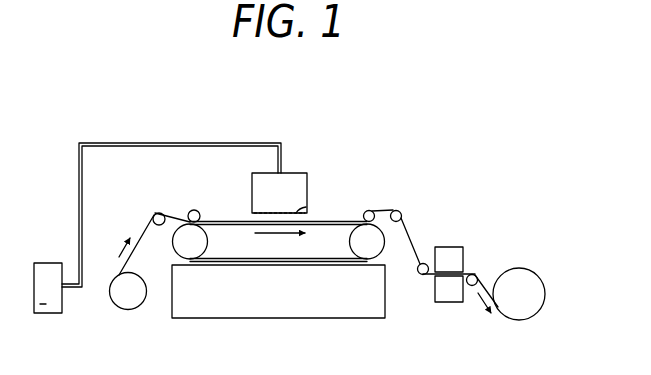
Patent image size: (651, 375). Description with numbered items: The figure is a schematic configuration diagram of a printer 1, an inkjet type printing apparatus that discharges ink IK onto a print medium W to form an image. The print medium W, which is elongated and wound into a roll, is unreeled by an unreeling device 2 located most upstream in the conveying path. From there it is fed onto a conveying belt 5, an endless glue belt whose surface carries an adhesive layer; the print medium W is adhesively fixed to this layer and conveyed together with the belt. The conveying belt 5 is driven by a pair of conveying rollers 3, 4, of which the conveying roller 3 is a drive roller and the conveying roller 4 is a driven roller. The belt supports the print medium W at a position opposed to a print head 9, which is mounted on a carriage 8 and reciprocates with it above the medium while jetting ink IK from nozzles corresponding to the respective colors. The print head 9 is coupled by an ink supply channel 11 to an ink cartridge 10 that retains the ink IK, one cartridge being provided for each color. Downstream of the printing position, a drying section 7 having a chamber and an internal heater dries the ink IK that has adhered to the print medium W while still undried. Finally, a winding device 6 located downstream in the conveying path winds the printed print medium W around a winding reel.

The printer 1 is at (278, 185).
The unreeling device 2 is at (141, 306).
The conveying roller 3 is at (208, 242).
The conveying roller 4 is at (384, 251).
The conveying belt 5 is at (283, 262).
The winding device 6 is at (519, 320).
The drying section 7 is at (473, 257).
The carriage 8 is at (307, 181).
The print head 9 is at (306, 207).
The ink cartridge 10 is at (47, 263).
The ink supply channel 11 is at (78, 180).
The ink IK is at (50, 304).
The print medium W is at (160, 213).